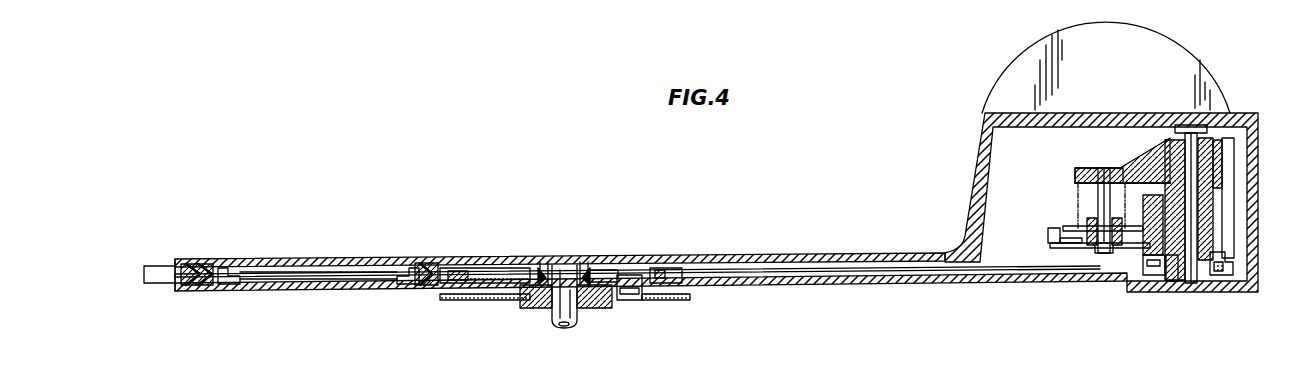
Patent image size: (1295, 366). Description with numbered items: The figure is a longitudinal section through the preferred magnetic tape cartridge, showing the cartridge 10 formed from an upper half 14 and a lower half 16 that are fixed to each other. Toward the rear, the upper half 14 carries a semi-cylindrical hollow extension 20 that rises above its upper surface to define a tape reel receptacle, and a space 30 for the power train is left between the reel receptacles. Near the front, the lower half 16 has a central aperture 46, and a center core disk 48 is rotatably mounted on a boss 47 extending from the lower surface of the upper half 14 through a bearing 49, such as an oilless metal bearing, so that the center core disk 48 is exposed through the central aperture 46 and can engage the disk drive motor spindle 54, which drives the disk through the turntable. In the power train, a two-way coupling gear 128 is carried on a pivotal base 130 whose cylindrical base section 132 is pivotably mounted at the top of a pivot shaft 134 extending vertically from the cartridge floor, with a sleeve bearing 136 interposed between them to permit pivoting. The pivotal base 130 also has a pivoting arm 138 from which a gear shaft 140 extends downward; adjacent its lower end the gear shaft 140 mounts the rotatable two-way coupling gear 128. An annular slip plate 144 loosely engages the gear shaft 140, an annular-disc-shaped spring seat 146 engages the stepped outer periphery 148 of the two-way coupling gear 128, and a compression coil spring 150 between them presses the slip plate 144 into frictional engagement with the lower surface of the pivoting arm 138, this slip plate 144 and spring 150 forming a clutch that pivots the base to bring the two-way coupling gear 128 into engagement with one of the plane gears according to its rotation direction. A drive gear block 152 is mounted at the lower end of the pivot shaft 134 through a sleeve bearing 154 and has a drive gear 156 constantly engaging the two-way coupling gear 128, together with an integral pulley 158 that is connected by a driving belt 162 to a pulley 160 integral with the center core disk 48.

The cartridge 10 is at (899, 240).
The upper half 14 is at (742, 257).
The lower half 16 is at (751, 284).
The semi-cylindrical hollow extension 20 is at (1011, 78).
The space for a power train 30 is at (1008, 248).
The central aperture 46 is at (458, 285).
The boss 47 is at (594, 265).
The center core disk 48 is at (493, 284).
The bearing 49 is at (541, 268).
The disk drive motor spindle 54 is at (576, 306).
The two-way coupling gear 128 is at (1051, 245).
The pivotal base 130 is at (1118, 165).
The cylindrical base section 132 is at (1170, 140).
The pivot shaft 134 is at (1189, 274).
The sleeve bearing 136 is at (1196, 127).
The pivoting arm 138 is at (1110, 166).
The gear shaft 140 is at (1080, 198).
The annular slip plate 144 is at (1077, 168).
The annular-disc-shaped spring seat 146 is at (1067, 249).
The stepped outer periphery 148 is at (1140, 238).
The compression coil spring 150 is at (1075, 210).
The drive gear block 152 is at (1145, 250).
The sleeve bearing 154 is at (1175, 282).
The drive gear 156 is at (1232, 167).
The pulley 158 is at (1228, 277).
The pulley 160 is at (676, 267).
The driving belt 162 is at (866, 272).